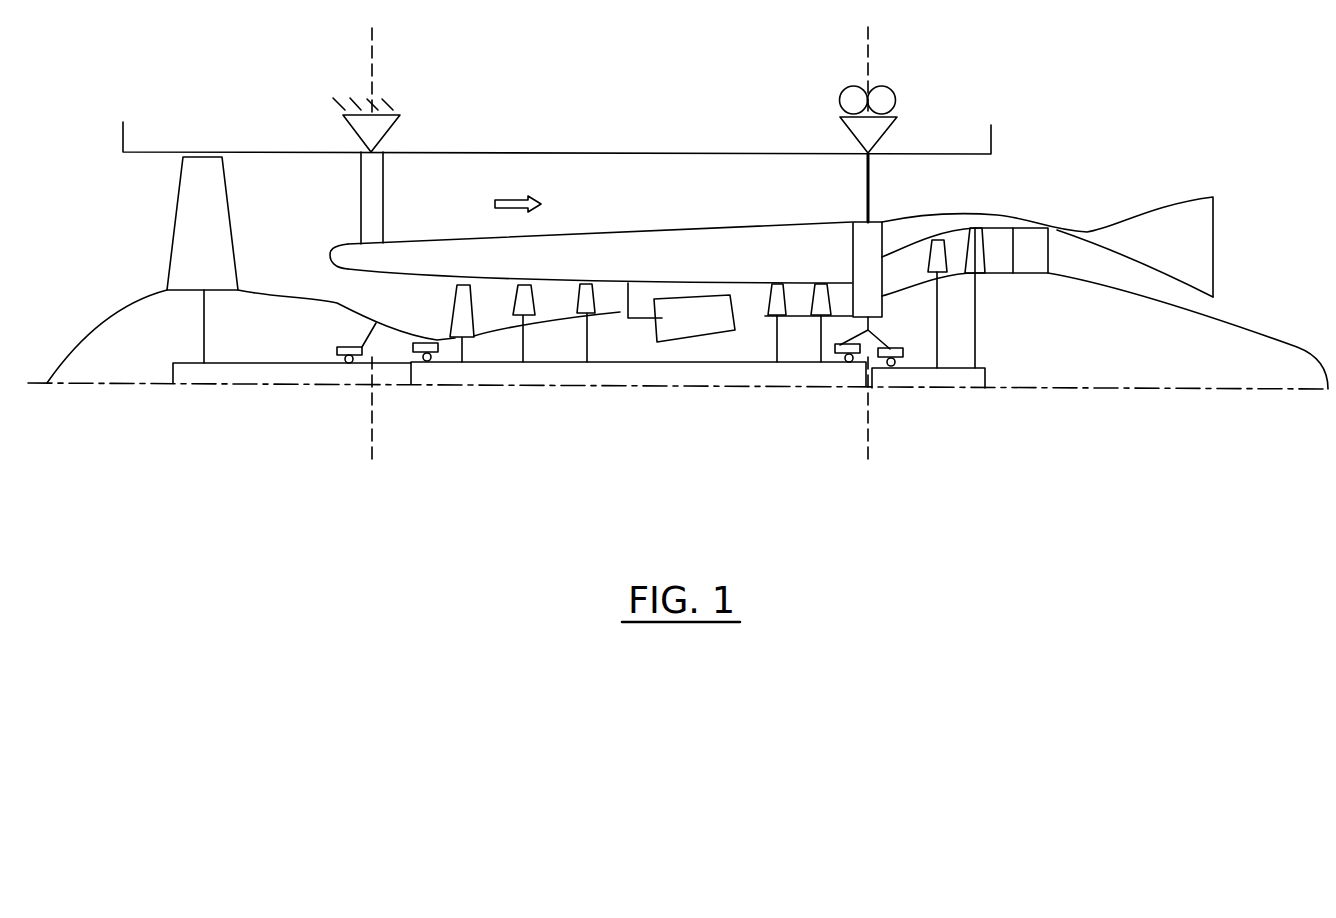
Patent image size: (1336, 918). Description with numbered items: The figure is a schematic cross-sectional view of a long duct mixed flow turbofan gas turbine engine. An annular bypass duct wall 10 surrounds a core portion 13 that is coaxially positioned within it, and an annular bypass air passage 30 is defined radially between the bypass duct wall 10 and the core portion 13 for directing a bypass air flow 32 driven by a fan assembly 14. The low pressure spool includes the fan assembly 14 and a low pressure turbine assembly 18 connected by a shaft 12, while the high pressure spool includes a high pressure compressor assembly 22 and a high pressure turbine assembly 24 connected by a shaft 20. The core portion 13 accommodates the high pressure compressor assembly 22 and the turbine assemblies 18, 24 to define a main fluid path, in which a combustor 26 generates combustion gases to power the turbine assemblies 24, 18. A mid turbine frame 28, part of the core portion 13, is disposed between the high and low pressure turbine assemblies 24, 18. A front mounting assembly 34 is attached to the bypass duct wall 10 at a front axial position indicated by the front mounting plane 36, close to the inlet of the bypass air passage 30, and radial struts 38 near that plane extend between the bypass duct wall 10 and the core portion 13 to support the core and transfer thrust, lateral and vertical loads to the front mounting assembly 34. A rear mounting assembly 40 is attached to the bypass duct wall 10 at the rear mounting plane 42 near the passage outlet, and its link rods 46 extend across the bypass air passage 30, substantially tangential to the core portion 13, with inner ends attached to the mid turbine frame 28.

The annular bypass duct wall 10 is at (557, 152).
The shaft 12 is at (260, 373).
The core portion 13 is at (752, 222).
The fan assembly 14 is at (201, 175).
The low pressure turbine assembly 18 is at (978, 262).
The shaft 20 is at (733, 373).
The high pressure compressor assembly 22 is at (522, 313).
The high pressure turbine assembly 24 is at (818, 305).
The combustor 26 is at (683, 320).
The mid turbine frame 28 is at (882, 305).
The annular bypass air passage 30 is at (631, 204).
The bypass air flow 32 is at (512, 197).
The front mounting assembly 34 is at (393, 110).
The front mounting plane 36 is at (373, 85).
The radial struts 38 is at (360, 194).
The rear mounting assembly 40 is at (881, 99).
The rear mounting plane 42 is at (868, 53).
The link rods 46 is at (870, 190).